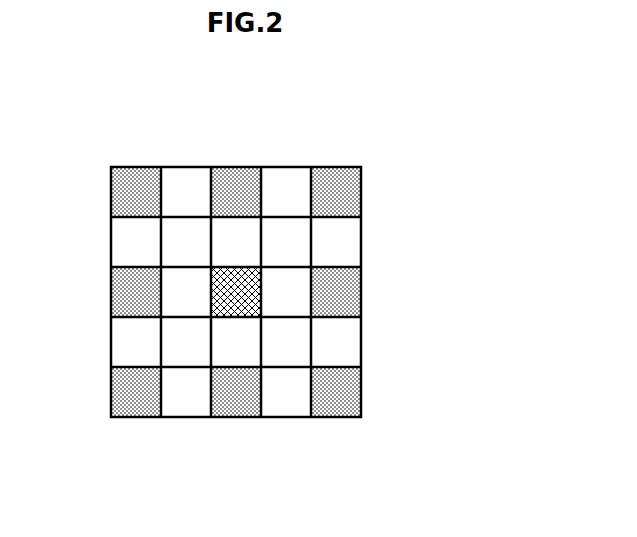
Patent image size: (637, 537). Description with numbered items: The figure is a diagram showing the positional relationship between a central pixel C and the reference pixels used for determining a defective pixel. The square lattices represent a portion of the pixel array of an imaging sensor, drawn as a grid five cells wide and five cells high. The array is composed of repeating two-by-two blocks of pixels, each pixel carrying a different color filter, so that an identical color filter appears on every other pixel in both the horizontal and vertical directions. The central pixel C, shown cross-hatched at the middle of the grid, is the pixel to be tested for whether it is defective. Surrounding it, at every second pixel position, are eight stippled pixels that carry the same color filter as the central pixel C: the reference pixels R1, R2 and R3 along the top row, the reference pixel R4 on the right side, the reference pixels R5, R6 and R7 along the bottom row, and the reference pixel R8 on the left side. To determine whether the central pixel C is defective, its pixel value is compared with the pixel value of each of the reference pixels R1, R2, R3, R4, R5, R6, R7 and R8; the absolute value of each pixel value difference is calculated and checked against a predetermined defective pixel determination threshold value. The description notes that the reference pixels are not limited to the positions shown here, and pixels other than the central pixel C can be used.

The reference pixel R1 is at (141, 180).
The reference pixel R2 is at (242, 180).
The reference pixel R3 is at (343, 180).
The reference pixel R4 is at (350, 288).
The reference pixel R5 is at (332, 405).
The reference pixel R6 is at (232, 405).
The reference pixel R7 is at (130, 405).
The reference pixel R8 is at (122, 297).
The central pixel C is at (252, 287).